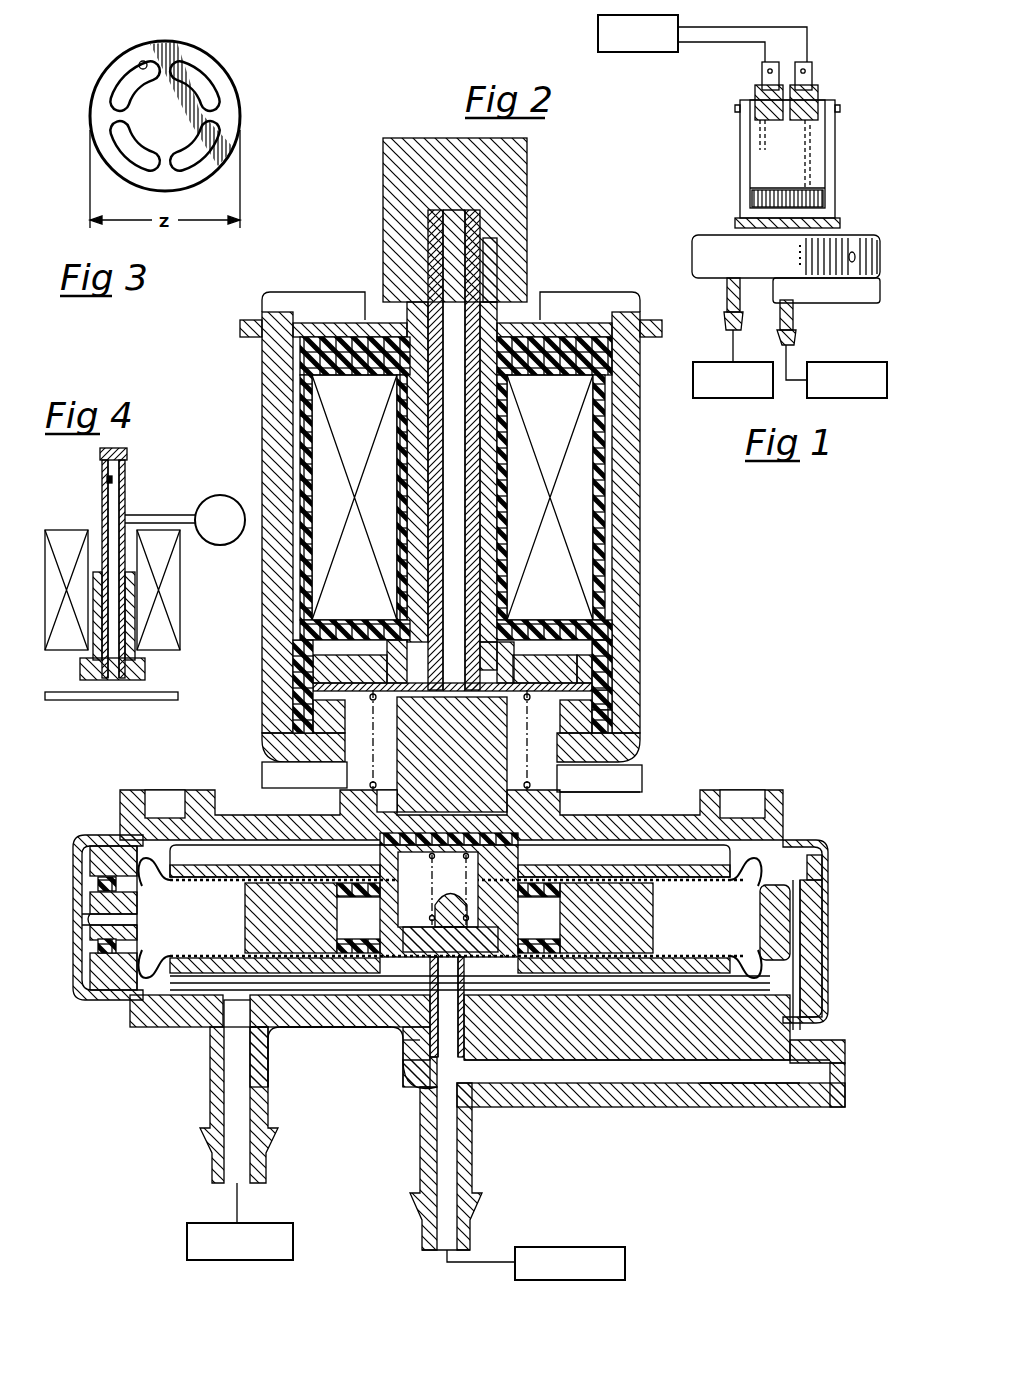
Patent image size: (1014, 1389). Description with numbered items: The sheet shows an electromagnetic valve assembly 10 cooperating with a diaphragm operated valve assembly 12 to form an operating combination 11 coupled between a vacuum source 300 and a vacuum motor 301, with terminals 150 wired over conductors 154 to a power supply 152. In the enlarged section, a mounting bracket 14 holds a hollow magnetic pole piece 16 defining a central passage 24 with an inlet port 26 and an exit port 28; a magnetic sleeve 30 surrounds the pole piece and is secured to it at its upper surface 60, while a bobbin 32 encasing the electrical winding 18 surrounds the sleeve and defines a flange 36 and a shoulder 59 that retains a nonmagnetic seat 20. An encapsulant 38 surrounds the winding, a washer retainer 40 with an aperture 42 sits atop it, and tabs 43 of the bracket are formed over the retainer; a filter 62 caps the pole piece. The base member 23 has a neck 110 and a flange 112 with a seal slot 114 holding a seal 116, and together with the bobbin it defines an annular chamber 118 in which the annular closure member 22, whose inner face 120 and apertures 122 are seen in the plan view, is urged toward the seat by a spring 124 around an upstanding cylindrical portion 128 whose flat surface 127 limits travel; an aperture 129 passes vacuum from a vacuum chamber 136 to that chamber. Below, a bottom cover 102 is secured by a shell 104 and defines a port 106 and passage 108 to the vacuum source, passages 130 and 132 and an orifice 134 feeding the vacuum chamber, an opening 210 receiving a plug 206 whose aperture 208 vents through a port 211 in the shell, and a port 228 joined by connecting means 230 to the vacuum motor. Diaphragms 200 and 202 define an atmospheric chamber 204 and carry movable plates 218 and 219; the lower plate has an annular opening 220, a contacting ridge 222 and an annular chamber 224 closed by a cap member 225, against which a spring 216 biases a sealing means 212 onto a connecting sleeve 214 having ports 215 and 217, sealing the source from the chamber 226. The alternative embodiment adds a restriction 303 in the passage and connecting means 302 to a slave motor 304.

In FIG. 1, the electromagnetic valve assembly 10 is at (730, 133).
In FIG. 2, the electromagnetic valve assembly 10 is at (660, 516).
In FIG. 1, the operating combination 11 is at (698, 188).
In FIG. 1, the diaphragm operated valve assembly 12 is at (688, 250).
In FIG. 2, the diaphragm operated valve assembly 12 is at (140, 1038).
In FIG. 1, the mounting bracket 14 is at (836, 158).
In FIG. 2, the mounting bracket 14 is at (642, 452).
In FIG. 2, the pole piece 16 is at (500, 264).
In FIG. 2, the electrical winding 18 is at (600, 592).
In FIG. 2, the seat 20 is at (510, 665).
In FIG. 3, the closure member 22 is at (222, 53).
In FIG. 4, the closure member 22 is at (160, 692).
In FIG. 2, the closure member 22 is at (328, 683).
In FIG. 1, the base member 23 is at (840, 222).
In FIG. 2, the base member 23 is at (258, 815).
In FIG. 2, the central passage 24 is at (440, 262).
In FIG. 4, the inlet port 26 is at (120, 448).
In FIG. 2, the inlet port 26 is at (438, 206).
In FIG. 2, the exit port 28 is at (497, 642).
In FIG. 2, the sleeve 30 is at (498, 320).
In FIG. 2, the bobbin 32 is at (305, 360).
In FIG. 2, the flange 36 is at (620, 760).
In FIG. 2, the encapsulant 38 is at (618, 352).
In FIG. 2, the washer retainer 40 is at (330, 330).
In FIG. 2, the aperture 42 is at (505, 322).
In FIG. 2, the tabs 43 is at (565, 322).
In FIG. 2, the shoulder 59 is at (545, 675).
In FIG. 2, the upper surface 60 is at (410, 298).
In FIG. 1, the filter 62 is at (783, 68).
In FIG. 2, the filter 62 is at (527, 160).
In FIG. 1, the bottom cover 102 is at (824, 303).
In FIG. 2, the bottom cover 102 is at (832, 1095).
In FIG. 2, the shell 104 is at (828, 1010).
In FIG. 2, the port 106 is at (432, 1252).
In FIG. 2, the passage 108 is at (428, 1238).
In FIG. 2, the neck 110 is at (565, 800).
In FIG. 2, the flange 112 is at (605, 788).
In FIG. 2, the seal slot 114 is at (603, 742).
In FIG. 2, the seal 116 is at (605, 710).
In FIG. 2, the annular chamber 118 is at (605, 688).
In FIG. 3, the inner face 120 is at (160, 128).
In FIG. 3, the apertures 122 is at (143, 60).
In FIG. 2, the spring 124 is at (380, 740).
In FIG. 2, the flat surface area 127 is at (528, 700).
In FIG. 2, the cylindrical portion 128 is at (392, 695).
In FIG. 2, the aperture 129 is at (380, 796).
In FIG. 2, the passage 130 is at (740, 1090).
In FIG. 2, the passage 132 is at (805, 1050).
In FIG. 2, the orifice 134 is at (828, 918).
In FIG. 2, the vacuum chamber 136 is at (648, 860).
In FIG. 1, the electrical connecting means 150 is at (760, 70).
In FIG. 1, the power supply 152 is at (668, 55).
In FIG. 1, the conductors 154 is at (724, 27).
In FIG. 2, the diaphragm 200 is at (130, 830).
In FIG. 2, the diaphragm 202 is at (140, 1010).
In FIG. 2, the atmospheric chamber 204 is at (215, 923).
In FIG. 2, the plug 206 is at (96, 928).
In FIG. 2, the aperture 208 is at (88, 915).
In FIG. 2, the opening 210 is at (98, 952).
In FIG. 2, the port 211 is at (90, 898).
In FIG. 2, the sealing means 212 is at (362, 1022).
In FIG. 2, the connecting sleeve 214 is at (407, 1050).
In FIG. 2, the port 215 is at (406, 1022).
In FIG. 2, the spring 216 is at (462, 842).
In FIG. 2, the port 217 is at (418, 1088).
In FIG. 2, the movable plate 218 is at (238, 868).
In FIG. 2, the movable plate 219 is at (205, 1000).
In FIG. 2, the annular opening 220 is at (500, 975).
In FIG. 2, the contacting ridge 222 is at (525, 1040).
In FIG. 2, the annular chamber 224 is at (508, 918).
In FIG. 2, the cap member 225 is at (430, 833).
In FIG. 2, the chamber 226 is at (325, 1022).
In FIG. 2, the port 228 is at (216, 1022).
In FIG. 1, the connecting means 230 is at (726, 298).
In FIG. 2, the connecting means 230 is at (212, 1092).
In FIG. 1, the vacuum source 300 is at (838, 362).
In FIG. 2, the vacuum source 300 is at (595, 1247).
In FIG. 1, the vacuum motor 301 is at (725, 362).
In FIG. 2, the vacuum motor 301 is at (280, 1223).
In FIG. 4, the connecting means 302 is at (143, 515).
In FIG. 4, the restriction 303 is at (113, 480).
In FIG. 4, the slave motor 304 is at (210, 495).